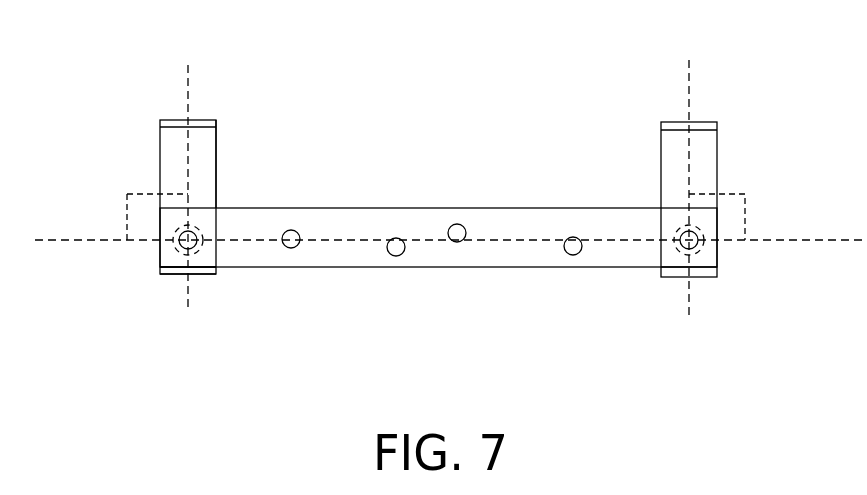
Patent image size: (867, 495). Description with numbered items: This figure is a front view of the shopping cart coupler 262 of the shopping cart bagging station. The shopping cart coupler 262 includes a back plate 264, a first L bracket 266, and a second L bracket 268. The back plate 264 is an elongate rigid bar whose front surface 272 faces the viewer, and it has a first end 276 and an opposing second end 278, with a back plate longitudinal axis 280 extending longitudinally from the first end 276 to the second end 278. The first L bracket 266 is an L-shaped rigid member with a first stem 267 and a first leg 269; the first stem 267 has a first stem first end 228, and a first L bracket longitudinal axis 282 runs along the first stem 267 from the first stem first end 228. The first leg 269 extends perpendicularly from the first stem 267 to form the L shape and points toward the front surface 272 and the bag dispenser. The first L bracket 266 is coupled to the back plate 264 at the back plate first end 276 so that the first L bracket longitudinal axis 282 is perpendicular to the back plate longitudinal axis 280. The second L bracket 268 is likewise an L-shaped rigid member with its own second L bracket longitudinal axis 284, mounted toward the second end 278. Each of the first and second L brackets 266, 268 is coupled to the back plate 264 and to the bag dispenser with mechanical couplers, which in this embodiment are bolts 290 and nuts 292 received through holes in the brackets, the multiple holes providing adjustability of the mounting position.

The first stem first end 228 is at (178, 276).
The shopping cart coupler 262 is at (411, 225).
The back plate 264 is at (515, 268).
The first L bracket 266 is at (155, 164).
The first stem 267 is at (217, 138).
The second L bracket 268 is at (718, 155).
The first leg 269 is at (172, 120).
The front surface 272 is at (366, 234).
The first end 276 is at (159, 275).
The second end 278 is at (717, 279).
The back plate longitudinal axis 280 is at (799, 239).
The first L bracket longitudinal axis 282 is at (189, 82).
The second L bracket longitudinal axis 284 is at (690, 78).
The bolts 290 is at (197, 233).
The nuts 292 is at (197, 249).